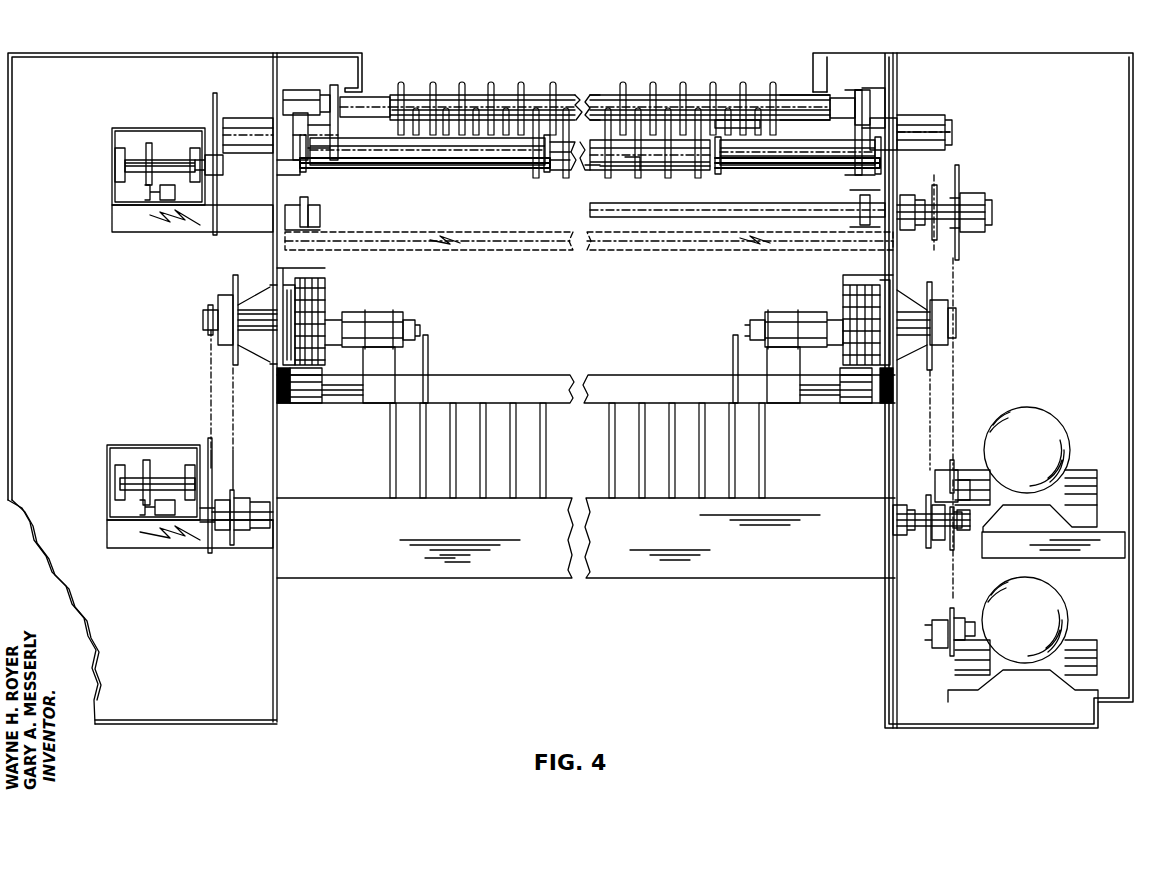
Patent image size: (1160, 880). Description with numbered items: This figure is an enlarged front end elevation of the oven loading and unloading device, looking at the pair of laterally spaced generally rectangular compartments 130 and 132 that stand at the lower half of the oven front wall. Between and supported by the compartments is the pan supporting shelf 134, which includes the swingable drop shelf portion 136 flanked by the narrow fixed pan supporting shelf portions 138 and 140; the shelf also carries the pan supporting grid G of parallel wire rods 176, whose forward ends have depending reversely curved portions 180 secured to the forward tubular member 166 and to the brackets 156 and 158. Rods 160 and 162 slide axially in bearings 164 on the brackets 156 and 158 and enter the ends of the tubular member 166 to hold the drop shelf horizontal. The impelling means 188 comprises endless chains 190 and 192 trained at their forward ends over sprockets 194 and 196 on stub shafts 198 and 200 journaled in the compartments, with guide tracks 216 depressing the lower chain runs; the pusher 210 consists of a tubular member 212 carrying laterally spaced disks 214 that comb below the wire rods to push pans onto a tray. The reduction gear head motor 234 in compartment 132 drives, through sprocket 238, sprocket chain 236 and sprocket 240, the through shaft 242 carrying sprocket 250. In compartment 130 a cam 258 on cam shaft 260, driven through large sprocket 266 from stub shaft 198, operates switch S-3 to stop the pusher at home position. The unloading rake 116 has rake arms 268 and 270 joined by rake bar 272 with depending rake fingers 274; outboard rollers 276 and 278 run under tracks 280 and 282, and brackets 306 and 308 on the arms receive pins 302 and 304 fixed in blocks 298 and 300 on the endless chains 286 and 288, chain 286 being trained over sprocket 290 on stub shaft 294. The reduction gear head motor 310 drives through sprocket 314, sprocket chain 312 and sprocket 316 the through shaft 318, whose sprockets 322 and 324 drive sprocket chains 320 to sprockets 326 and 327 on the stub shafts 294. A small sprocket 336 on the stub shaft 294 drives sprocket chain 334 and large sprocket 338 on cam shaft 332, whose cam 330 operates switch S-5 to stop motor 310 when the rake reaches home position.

The compartment 130 is at (115, 52).
The compartment 132 is at (1010, 52).
The unloading rake 116 is at (530, 374).
The rake bar 272 is at (620, 374).
The rake fingers 274 is at (607, 430).
The guide tracks 216 is at (318, 197).
The stub shaft 198 is at (250, 115).
The large sprocket 266 is at (214, 93).
The endless chain 190 is at (300, 100).
The sprocket 194 is at (330, 108).
The fixed pan supporting shelf portion 138 is at (405, 95).
The tubular member 212 is at (470, 94).
The pusher 210 is at (548, 82).
The pan supporting grid G is at (598, 100).
The wire rods 176 is at (632, 100).
The disks 214 is at (680, 92).
The fixed pan supporting shelf portion 140 is at (725, 108).
The impelling means 188 is at (770, 30).
The sprocket 196 is at (818, 100).
The endless chain 192 is at (862, 98).
The stub shaft 200 is at (922, 125).
The rod 160 is at (400, 166).
The bracket 156 is at (425, 177).
The bearings 164 is at (292, 172).
The forward tubular member 166 is at (522, 168).
The pan supporting shelf 134 is at (592, 170).
The reversely curved portions 180 is at (605, 168).
The drop shelf portion 136 is at (655, 168).
The bracket 158 is at (797, 177).
The rod 162 is at (797, 168).
The sprocket 250 is at (936, 182).
The through shaft 242 is at (976, 203).
The sprocket 240 is at (960, 252).
The switch S-3 is at (145, 194).
The cam shaft 260 is at (137, 158).
The cam 258 is at (149, 142).
The sprocket 326 is at (234, 276).
The small sprocket 336 is at (219, 300).
The stub shaft 294 is at (205, 318).
The sprocket chain 334 is at (210, 362).
The large sprocket 338 is at (210, 405).
The sprocket chain 320 is at (234, 408).
The endless chain 286 is at (325, 283).
The sprocket 290 is at (322, 300).
The block 298 is at (348, 312).
The pin 302 is at (416, 322).
The bracket 306 is at (398, 357).
The rake arm 268 is at (381, 405).
The outboard roller 276 is at (316, 407).
The track 280 is at (282, 405).
The endless chain 288 is at (845, 295).
The block 300 is at (822, 320).
The pin 304 is at (750, 330).
The bracket 308 is at (765, 360).
The rake arm 270 is at (788, 405).
The outboard roller 278 is at (846, 407).
The track 282 is at (886, 405).
The sprocket 327 is at (932, 290).
The sprocket chain 236 is at (955, 352).
The reduction gear head motor 234 is at (1043, 412).
The reduction gear head motor 310 is at (1050, 582).
The sprocket 238 is at (954, 460).
The sprocket 324 is at (926, 492).
The through shaft 318 is at (920, 533).
The sprocket 316 is at (950, 553).
The sprocket chain 312 is at (955, 580).
The sprocket 314 is at (948, 630).
The switch S-5 is at (140, 500).
The cam 330 is at (145, 477).
The cam shaft 332 is at (168, 460).
The sprocket 322 is at (235, 492).